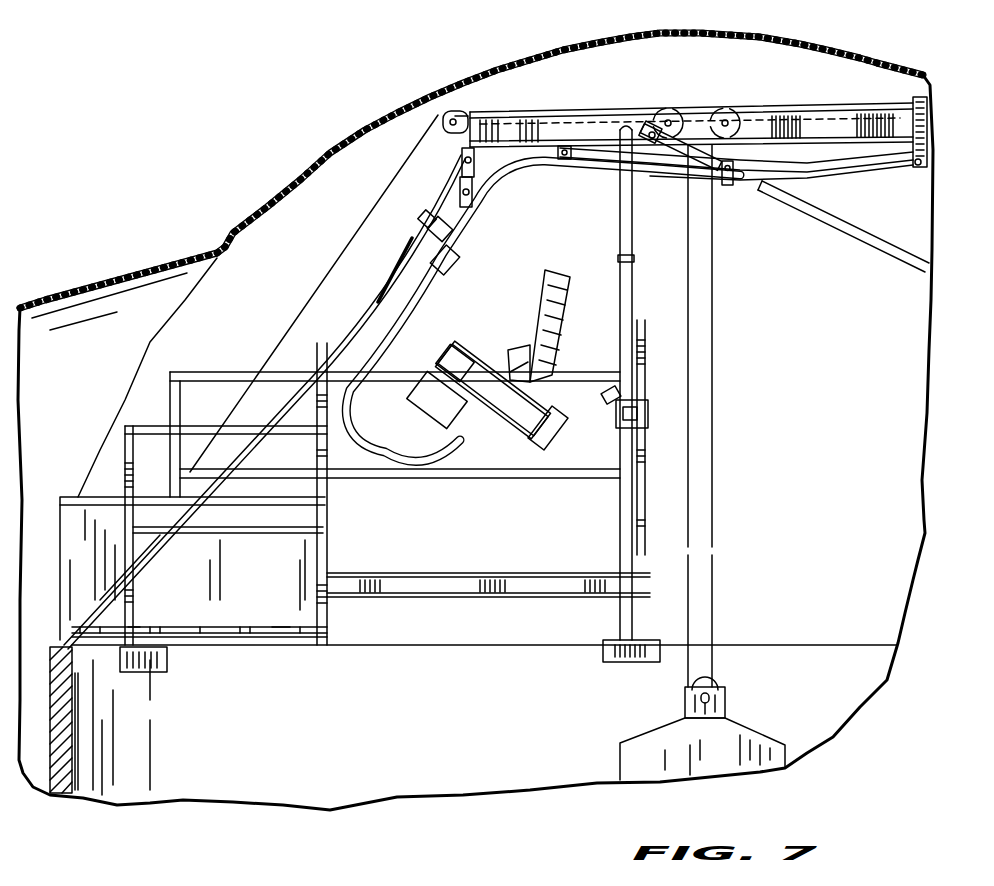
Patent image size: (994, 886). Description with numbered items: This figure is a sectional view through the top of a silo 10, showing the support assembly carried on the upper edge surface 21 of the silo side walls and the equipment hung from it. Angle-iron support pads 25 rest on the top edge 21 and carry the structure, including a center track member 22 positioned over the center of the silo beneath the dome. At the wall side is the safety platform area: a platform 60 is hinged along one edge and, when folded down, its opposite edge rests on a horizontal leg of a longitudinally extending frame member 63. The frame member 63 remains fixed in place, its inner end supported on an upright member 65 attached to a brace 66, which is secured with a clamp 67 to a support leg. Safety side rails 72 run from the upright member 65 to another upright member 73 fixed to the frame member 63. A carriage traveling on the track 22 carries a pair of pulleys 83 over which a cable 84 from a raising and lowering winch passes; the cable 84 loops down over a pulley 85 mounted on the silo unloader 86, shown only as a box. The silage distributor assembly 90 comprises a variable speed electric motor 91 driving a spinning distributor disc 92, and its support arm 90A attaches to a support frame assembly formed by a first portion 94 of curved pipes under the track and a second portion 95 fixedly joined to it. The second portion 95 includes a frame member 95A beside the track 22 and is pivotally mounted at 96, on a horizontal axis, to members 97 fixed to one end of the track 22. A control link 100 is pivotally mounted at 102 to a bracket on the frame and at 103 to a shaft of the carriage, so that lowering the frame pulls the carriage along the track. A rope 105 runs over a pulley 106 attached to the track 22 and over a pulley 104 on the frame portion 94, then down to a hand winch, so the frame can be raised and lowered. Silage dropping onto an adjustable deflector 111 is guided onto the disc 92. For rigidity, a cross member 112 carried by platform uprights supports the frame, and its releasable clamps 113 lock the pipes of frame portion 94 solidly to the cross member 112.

The silo 10 is at (72, 753).
The upper edge surface 21 is at (870, 643).
The center track member 22 is at (697, 110).
The support pads 25 is at (625, 665).
The platform 60 is at (200, 645).
The frame member 63 is at (288, 632).
The upright member 65 is at (330, 622).
The brace 66 is at (165, 552).
The clamp 67 is at (421, 219).
The safety side rails 72 is at (213, 427).
The upright member 73 is at (125, 460).
The pulleys 83 is at (722, 110).
The cable 84 is at (712, 526).
The pulley 85 is at (716, 688).
The silo unloader 86 is at (760, 751).
The silage distributor assembly 90 is at (452, 112).
The support arm 90A is at (380, 447).
The variable speed electric motor 91 is at (430, 395).
The distributor disc 92 is at (543, 428).
The first portion 94 is at (507, 165).
The second portion 95 is at (810, 182).
The frame member 95A is at (870, 168).
The pivot mounting 96 is at (918, 166).
The members 97 is at (913, 99).
The control link 100 is at (597, 157).
The pivotal mounting 102 is at (728, 188).
The pivotal mounting 103 is at (567, 146).
The pulley 104 is at (470, 202).
The rope 105 is at (473, 175).
The pulley 106 is at (464, 167).
The adjustable deflector 111 is at (545, 300).
The cross member 112 is at (660, 416).
The releasable clamps 113 is at (660, 390).